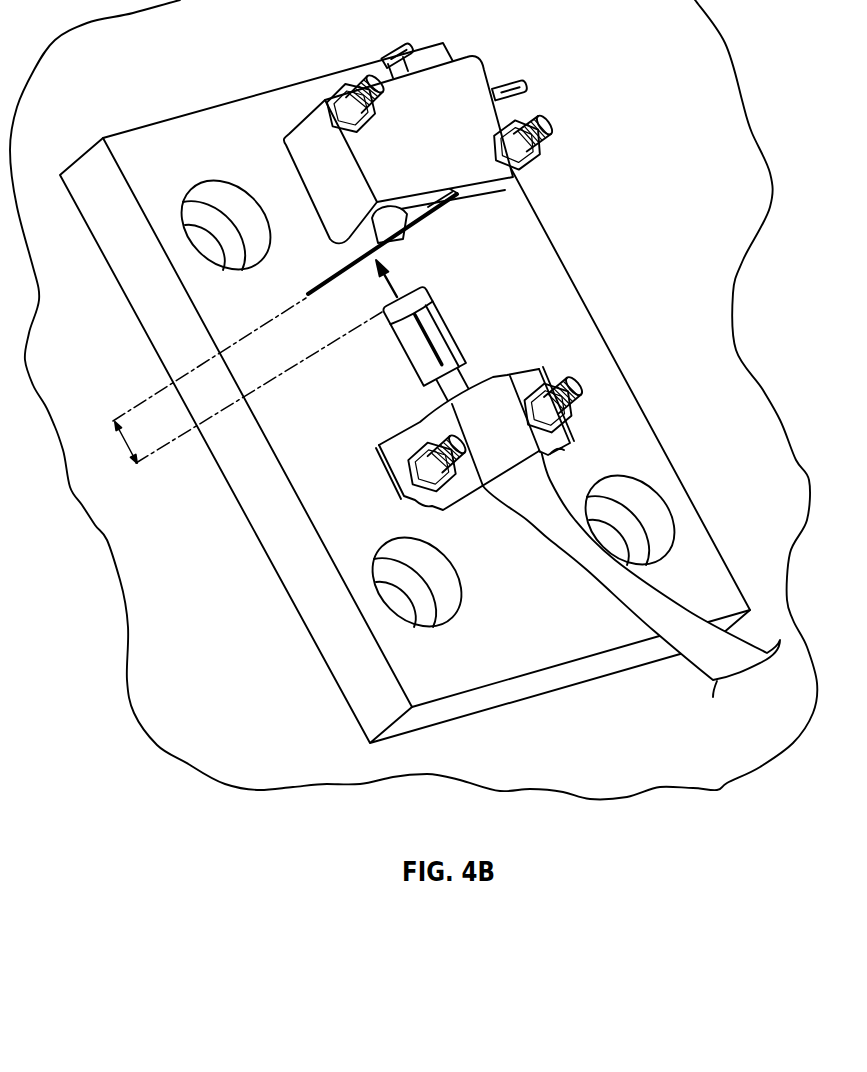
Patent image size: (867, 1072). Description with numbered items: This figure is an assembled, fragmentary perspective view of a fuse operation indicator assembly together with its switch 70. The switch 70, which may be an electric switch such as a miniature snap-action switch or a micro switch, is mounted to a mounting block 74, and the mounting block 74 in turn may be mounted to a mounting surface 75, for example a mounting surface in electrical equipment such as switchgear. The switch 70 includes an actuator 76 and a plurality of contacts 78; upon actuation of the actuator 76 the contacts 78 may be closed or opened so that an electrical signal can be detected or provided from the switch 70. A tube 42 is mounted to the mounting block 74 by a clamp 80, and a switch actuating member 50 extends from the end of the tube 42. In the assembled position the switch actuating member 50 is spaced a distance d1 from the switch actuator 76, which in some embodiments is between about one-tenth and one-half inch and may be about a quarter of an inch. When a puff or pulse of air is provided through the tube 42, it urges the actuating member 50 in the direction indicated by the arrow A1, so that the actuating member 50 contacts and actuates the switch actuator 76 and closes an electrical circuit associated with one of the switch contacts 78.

The tube 42 is at (557, 497).
The switch actuating member 50 is at (385, 356).
The switch 70 is at (423, 160).
The mounting block 74 is at (563, 263).
The mounting surface 75 is at (693, 763).
The actuator 76 is at (410, 231).
The contacts 78 is at (506, 79).
The clamp 80 is at (510, 377).
The arrow A1 is at (393, 288).
The distance d1 is at (122, 440).